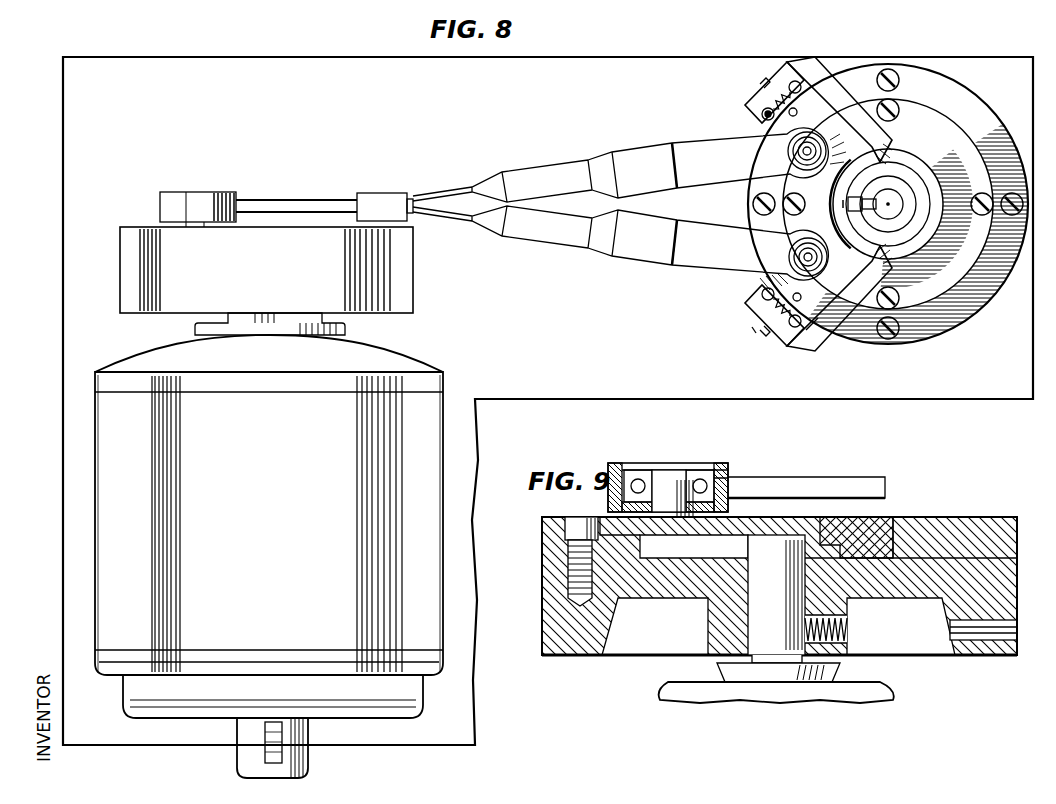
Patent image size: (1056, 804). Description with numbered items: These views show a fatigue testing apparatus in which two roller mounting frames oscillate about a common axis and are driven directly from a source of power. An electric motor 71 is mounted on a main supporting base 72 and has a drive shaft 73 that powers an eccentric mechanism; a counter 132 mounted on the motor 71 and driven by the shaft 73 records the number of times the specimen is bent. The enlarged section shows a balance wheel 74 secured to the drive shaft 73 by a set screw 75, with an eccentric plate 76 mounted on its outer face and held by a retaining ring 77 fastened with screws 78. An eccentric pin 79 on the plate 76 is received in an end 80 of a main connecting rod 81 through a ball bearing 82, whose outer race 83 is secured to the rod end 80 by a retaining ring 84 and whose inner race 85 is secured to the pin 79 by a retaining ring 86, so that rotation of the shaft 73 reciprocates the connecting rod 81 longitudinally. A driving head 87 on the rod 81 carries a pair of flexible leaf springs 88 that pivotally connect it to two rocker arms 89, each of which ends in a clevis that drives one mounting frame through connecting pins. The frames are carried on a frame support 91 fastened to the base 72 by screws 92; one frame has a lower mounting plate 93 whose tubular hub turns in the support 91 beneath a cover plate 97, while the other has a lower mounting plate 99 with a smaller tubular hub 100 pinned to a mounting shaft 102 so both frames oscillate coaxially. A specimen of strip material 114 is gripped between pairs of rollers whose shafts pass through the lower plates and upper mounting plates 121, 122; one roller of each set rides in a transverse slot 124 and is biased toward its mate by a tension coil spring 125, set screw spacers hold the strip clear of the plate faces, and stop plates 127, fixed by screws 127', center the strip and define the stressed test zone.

In FIG. 8, the electric motor 71 is at (433, 405).
In FIG. 9, the electric motor 71 is at (687, 695).
In FIG. 8, the main supporting base 72 is at (63, 190).
In FIG. 9, the drive shaft 73 is at (765, 622).
In FIG. 8, the balance wheel 74 is at (138, 285).
In FIG. 9, the balance wheel 74 is at (556, 608).
In FIG. 9, the set screw 75 is at (846, 627).
In FIG. 9, the eccentric plate 76 is at (815, 526).
In FIG. 9, the retaining ring 77 is at (880, 528).
In FIG. 9, the screws 78 is at (582, 532).
In FIG. 9, the eccentric pin 79 is at (672, 477).
In FIG. 8, the end of main connecting rod 80 is at (224, 192).
In FIG. 9, the end of main connecting rod 80 is at (615, 463).
In FIG. 8, the main connecting rod 81 is at (310, 204).
In FIG. 9, the main connecting rod 81 is at (832, 482).
In FIG. 9, the ball bearing 82 is at (704, 479).
In FIG. 9, the outer race 83 is at (727, 476).
In FIG. 9, the retaining ring 84 is at (725, 463).
In FIG. 9, the inner race 85 is at (694, 480).
In FIG. 9, the retaining ring 86 is at (648, 471).
In FIG. 8, the driving head 87 is at (380, 194).
In FIG. 8, the flexible leaf springs 88 is at (413, 197).
In FIG. 8, the rocker arms 89 is at (560, 172).
In FIG. 8, the frame support 91 is at (965, 312).
In FIG. 8, the screws 92 is at (892, 335).
In FIG. 8, the lower mounting plate 93 is at (903, 237).
In FIG. 8, the cover plate 97 is at (951, 130).
In FIG. 8, the lower mounting plate 99 is at (884, 178).
In FIG. 8, the tubular hub 100 is at (898, 192).
In FIG. 8, the mounting shaft 102 is at (901, 207).
In FIG. 8, the specimen of strip material 114 is at (877, 211).
In FIG. 8, the upper mounting plate 121 is at (815, 321).
In FIG. 8, the upper mounting plate 122 is at (757, 100).
In FIG. 8, the slots 124 is at (746, 116).
In FIG. 8, the tension coil springs 125 is at (766, 305).
In FIG. 8, the stop plates 127 is at (745, 351).
In FIG. 8, the screws 127' is at (732, 338).
In FIG. 8, the counter 132 is at (282, 739).